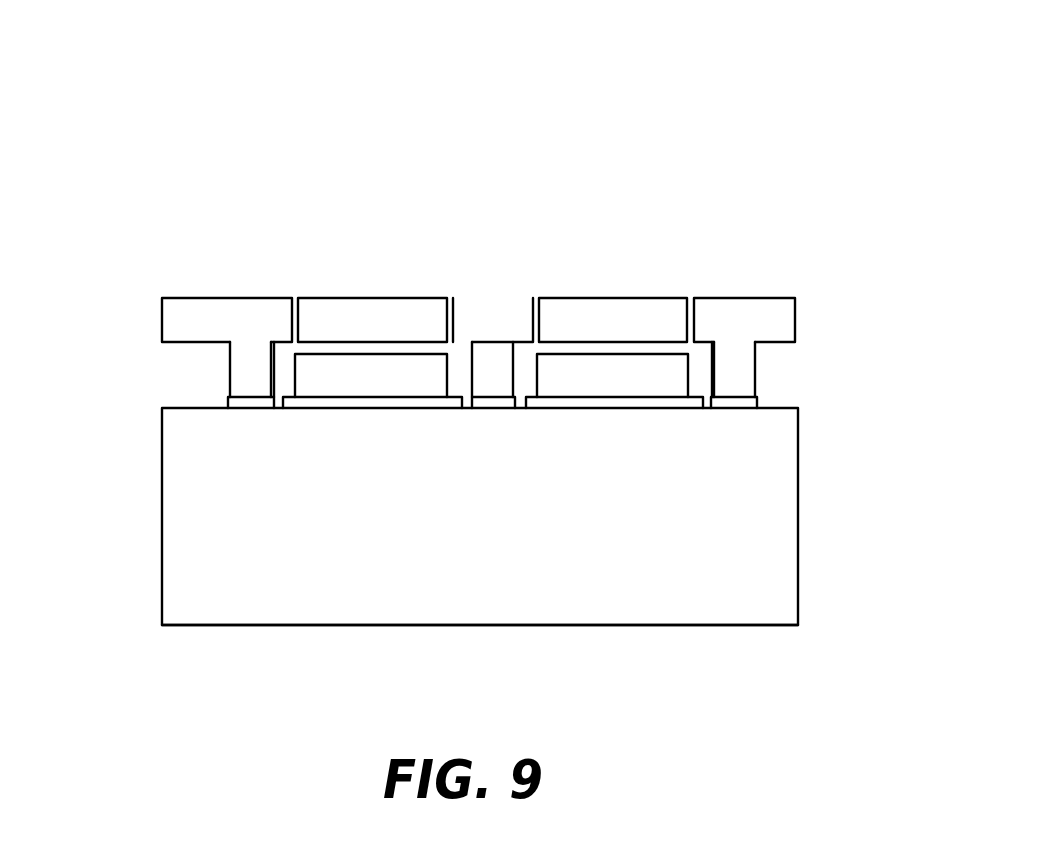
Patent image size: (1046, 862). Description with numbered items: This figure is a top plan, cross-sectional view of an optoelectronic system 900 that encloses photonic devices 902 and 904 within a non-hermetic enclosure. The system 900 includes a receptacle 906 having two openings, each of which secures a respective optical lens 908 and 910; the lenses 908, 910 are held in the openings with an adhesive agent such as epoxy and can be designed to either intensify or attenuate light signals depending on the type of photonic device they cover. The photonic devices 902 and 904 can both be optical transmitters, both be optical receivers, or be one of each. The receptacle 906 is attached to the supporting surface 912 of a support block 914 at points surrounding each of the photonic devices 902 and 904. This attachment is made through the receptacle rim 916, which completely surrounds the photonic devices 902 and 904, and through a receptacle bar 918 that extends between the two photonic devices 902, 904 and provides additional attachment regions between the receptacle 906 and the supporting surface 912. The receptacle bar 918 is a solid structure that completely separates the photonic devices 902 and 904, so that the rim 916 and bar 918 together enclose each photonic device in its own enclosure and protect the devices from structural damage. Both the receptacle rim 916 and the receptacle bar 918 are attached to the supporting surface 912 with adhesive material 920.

The optoelectronic system 900 is at (710, 114).
The photonic device 902 is at (450, 375).
The photonic device 904 is at (694, 375).
The receptacle 906 is at (193, 298).
The optical lens 908 is at (360, 298).
The optical lens 910 is at (615, 298).
The supporting surface 912 is at (180, 408).
The support block 914 is at (203, 625).
The receptacle rim 916 is at (230, 357).
The receptacle bar 918 is at (515, 377).
The adhesive material 920 is at (278, 402).